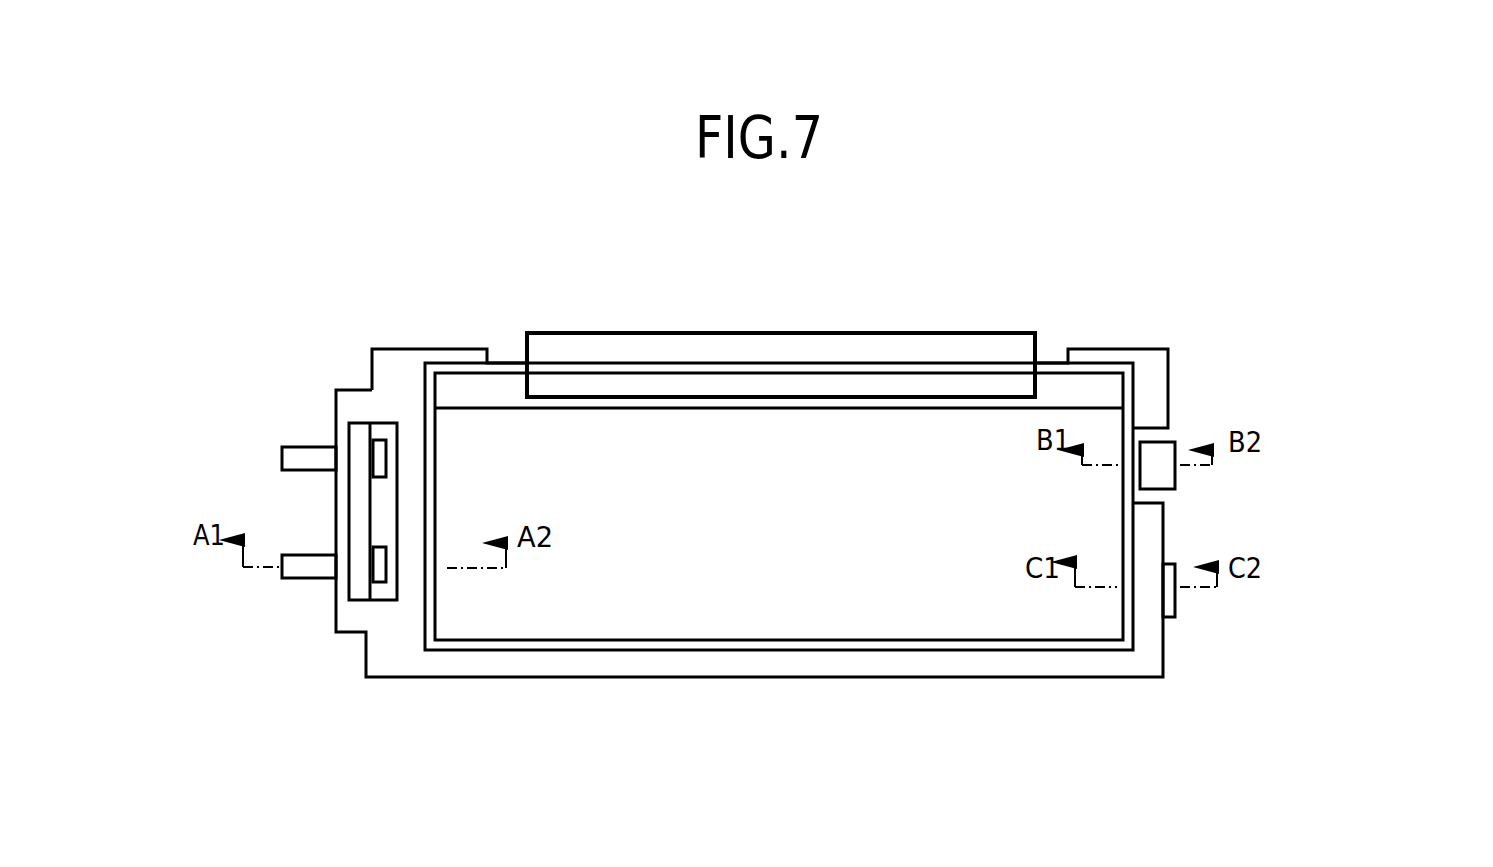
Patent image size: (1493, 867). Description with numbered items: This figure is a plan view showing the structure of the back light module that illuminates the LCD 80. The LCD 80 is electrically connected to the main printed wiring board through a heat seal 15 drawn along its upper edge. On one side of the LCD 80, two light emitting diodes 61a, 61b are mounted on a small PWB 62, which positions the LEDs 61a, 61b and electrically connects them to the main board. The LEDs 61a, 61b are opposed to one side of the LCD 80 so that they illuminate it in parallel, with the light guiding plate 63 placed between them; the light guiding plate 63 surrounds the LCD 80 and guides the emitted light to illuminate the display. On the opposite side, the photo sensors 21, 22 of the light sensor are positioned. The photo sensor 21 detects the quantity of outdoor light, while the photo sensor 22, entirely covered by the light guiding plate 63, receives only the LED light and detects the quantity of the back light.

The heat seal 15 is at (875, 333).
The photo sensor 21 is at (1158, 452).
The photo sensor 22 is at (1177, 570).
The light emitting diode 61a is at (377, 440).
The light emitting diode 61b is at (378, 597).
The PWB 62 is at (360, 583).
The light guiding plate 63 is at (647, 677).
The LCD 80 is at (625, 427).